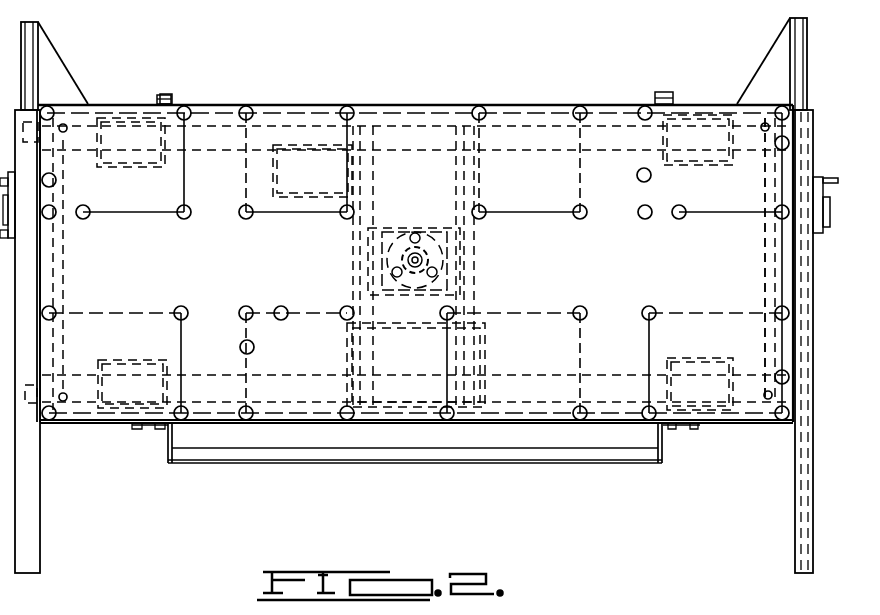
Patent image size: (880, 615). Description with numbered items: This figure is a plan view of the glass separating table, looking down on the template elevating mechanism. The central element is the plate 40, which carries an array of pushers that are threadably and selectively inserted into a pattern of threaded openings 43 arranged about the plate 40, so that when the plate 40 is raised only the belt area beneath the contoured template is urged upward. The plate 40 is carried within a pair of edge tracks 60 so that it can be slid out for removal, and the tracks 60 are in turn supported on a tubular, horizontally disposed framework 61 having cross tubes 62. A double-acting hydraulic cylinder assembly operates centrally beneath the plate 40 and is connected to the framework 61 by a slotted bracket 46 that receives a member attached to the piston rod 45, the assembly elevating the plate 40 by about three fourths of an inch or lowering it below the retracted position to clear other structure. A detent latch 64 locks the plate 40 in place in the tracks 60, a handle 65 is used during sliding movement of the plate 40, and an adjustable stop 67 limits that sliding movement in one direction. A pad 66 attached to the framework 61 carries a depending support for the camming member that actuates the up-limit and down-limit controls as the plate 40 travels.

The plate 40 is at (615, 390).
The threaded openings 43 is at (578, 219).
The piston rod 45 is at (413, 236).
The slotted bracket 46 is at (437, 230).
The edge tracks 60 is at (800, 485).
The framework 61 is at (762, 277).
The cross tubes 62 is at (482, 292).
The detent latch 64 is at (836, 207).
The handle 65 is at (366, 455).
The pad 66 is at (290, 213).
The adjustable stop 67 is at (173, 100).